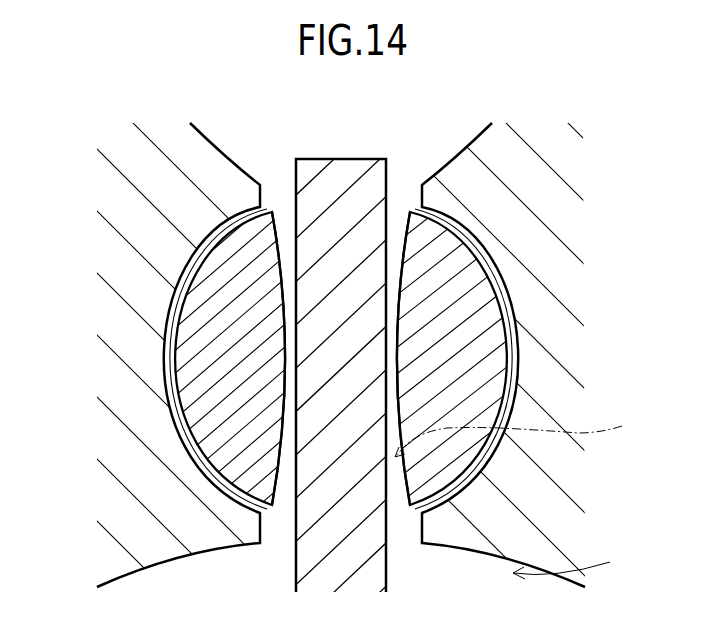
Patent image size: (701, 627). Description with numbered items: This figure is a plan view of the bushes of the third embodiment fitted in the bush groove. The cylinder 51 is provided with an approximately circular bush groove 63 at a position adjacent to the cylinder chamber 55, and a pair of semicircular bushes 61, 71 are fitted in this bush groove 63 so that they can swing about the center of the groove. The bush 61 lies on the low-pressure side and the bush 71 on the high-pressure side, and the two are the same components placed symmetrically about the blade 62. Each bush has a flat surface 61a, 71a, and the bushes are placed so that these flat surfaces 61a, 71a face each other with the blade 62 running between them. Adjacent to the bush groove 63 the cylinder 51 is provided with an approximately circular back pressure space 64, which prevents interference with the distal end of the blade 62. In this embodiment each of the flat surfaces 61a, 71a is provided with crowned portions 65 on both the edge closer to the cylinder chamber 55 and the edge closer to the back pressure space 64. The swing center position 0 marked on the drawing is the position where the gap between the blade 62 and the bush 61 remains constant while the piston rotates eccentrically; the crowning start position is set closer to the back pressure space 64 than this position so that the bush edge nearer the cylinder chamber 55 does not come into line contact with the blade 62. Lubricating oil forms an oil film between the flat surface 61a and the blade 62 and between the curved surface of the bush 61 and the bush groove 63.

The cylinder 51 is at (100, 152).
The back pressure space 64 is at (466, 156).
The blade 62 is at (341, 165).
The bush 71 is at (182, 381).
The flat surface 71a is at (285, 361).
The bush groove 63 is at (172, 300).
The bush 61 is at (498, 380).
The flat surface 61a is at (397, 362).
The crowned portion 65 is at (280, 241).
The swing center position 0 is at (517, 434).
The cylinder chamber 55 is at (650, 572).